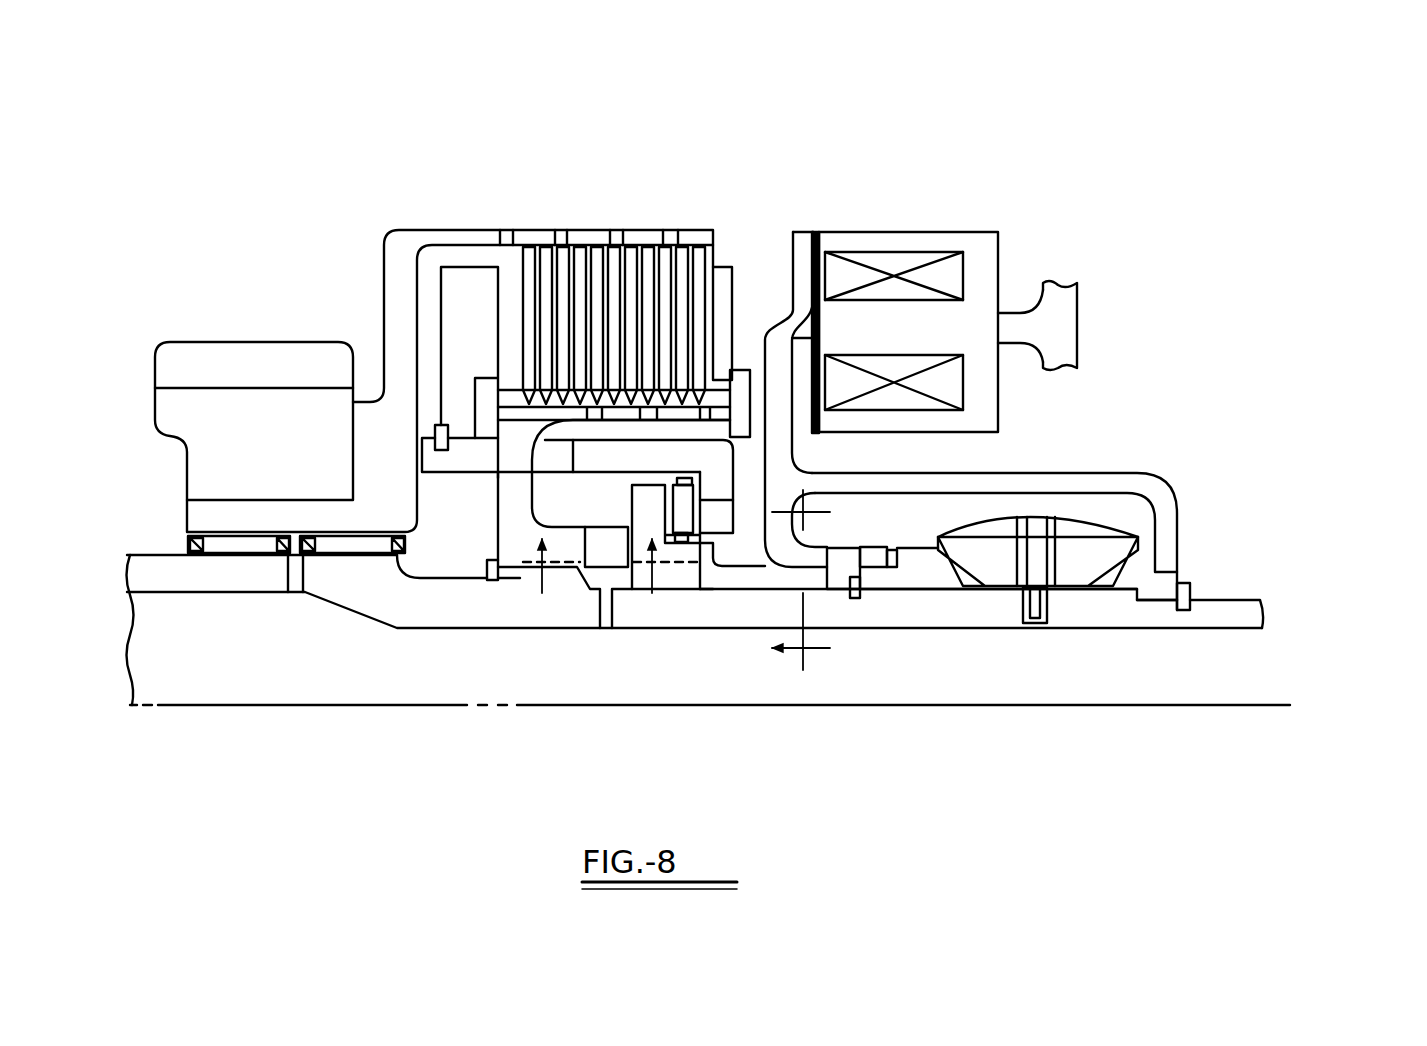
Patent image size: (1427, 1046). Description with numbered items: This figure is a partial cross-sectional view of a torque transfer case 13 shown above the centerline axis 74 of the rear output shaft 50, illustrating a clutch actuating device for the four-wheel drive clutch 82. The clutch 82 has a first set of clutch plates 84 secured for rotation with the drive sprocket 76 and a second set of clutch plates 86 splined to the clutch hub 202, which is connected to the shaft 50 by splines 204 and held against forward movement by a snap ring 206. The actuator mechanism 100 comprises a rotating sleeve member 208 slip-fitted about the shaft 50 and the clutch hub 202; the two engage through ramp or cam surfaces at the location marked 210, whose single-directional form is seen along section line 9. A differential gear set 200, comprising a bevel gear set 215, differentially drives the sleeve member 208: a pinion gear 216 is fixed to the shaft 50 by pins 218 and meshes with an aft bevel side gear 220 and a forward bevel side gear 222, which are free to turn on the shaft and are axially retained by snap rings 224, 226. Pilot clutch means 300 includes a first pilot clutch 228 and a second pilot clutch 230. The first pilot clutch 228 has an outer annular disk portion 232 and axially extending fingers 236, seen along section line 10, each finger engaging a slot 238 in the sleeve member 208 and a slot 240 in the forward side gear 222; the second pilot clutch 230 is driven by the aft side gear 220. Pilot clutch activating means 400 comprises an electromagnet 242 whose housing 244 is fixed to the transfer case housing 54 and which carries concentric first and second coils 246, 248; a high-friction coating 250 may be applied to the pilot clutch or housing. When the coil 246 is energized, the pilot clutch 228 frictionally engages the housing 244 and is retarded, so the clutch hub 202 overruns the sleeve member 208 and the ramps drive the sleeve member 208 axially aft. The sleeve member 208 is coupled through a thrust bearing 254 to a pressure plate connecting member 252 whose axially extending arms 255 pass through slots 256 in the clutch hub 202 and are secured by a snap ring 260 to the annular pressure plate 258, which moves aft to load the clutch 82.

The torque transfer case 13 is at (1060, 121).
The rear output shaft 50 is at (244, 667).
The housing 54 is at (1080, 334).
The centerline axis 74 is at (283, 707).
The drive sprocket 76 is at (165, 403).
The four-wheel drive clutch 82 is at (624, 280).
The first set of clutch plates 84 is at (550, 247).
The second set of clutch plates 86 is at (608, 405).
The actuator mechanism 100 is at (597, 660).
The differential gear set 200 is at (1263, 553).
The clutch hub 202 is at (508, 508).
The splines 204 is at (520, 578).
The snap ring 206 is at (490, 580).
The rotating sleeve member 208 is at (667, 583).
The ramp engagement 210 is at (598, 527).
The bevel gear set 215 is at (1180, 550).
The pinion gear 216 is at (1088, 620).
The pins 218 is at (1035, 623).
The aft bevel side gear 220 is at (1150, 590).
The forward bevel side gear 222 is at (942, 583).
The snap ring 224 is at (862, 598).
The snap ring 226 is at (1185, 595).
The first pilot clutch 228 is at (793, 230).
The second pilot clutch 230 is at (1127, 473).
The outer annular disk portion 232 is at (778, 453).
The axially extending fingers 236 is at (875, 553).
The slot 238 is at (712, 553).
The slot 240 is at (893, 548).
The electromagnet 242 is at (946, 229).
The housing 244 is at (1000, 383).
The first coil 246 is at (960, 265).
The second coil 248 is at (955, 392).
The coating 250 is at (818, 227).
The pressure plate connecting member 252 is at (683, 542).
The thrust bearing 254 is at (712, 530).
The axially extending arms 255 is at (432, 460).
The slots 256 is at (500, 478).
The annular pressure plate 258 is at (458, 303).
The snap ring 260 is at (437, 432).
The pilot clutch means 300 is at (801, 226).
The pilot clutch activating means 400 is at (1002, 296).
The section line 9 is at (597, 585).
The section line 10 is at (825, 580).